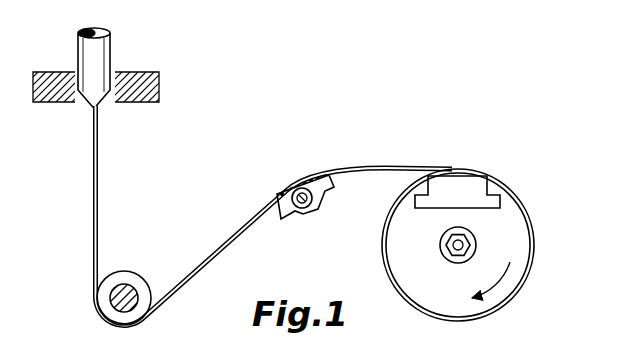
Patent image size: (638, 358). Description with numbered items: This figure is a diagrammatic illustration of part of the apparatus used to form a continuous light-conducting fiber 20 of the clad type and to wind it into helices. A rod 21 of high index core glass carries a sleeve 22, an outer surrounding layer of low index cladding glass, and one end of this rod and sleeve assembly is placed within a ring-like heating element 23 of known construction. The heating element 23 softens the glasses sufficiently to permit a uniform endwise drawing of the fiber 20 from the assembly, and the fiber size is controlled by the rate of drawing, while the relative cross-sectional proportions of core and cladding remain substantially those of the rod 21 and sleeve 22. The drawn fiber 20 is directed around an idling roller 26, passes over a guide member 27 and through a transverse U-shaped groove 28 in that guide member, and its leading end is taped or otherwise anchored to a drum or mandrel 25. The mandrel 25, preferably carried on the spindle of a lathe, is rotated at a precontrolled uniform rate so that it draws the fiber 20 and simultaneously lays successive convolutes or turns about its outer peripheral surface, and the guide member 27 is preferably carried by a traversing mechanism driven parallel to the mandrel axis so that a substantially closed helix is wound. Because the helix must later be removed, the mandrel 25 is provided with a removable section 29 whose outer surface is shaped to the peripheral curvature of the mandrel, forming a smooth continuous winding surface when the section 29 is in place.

The light-conducting fiber 20 is at (99, 175).
The rod 21 is at (90, 31).
The sleeve 22 is at (82, 32).
The ring-like heating element 23 is at (133, 73).
The mandrel 25 is at (511, 237).
The idling roller 26 is at (130, 276).
The guide member 27 is at (318, 180).
The U-shaped groove 28 is at (280, 194).
The removable section 29 is at (468, 193).